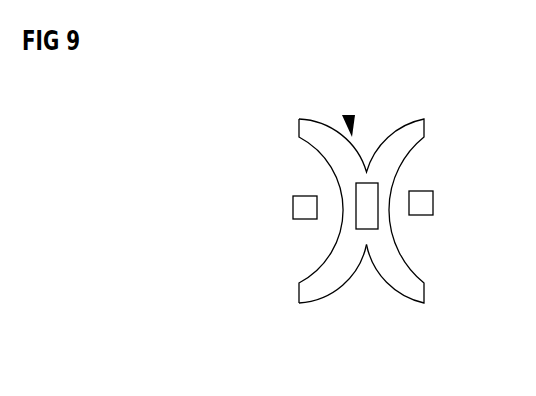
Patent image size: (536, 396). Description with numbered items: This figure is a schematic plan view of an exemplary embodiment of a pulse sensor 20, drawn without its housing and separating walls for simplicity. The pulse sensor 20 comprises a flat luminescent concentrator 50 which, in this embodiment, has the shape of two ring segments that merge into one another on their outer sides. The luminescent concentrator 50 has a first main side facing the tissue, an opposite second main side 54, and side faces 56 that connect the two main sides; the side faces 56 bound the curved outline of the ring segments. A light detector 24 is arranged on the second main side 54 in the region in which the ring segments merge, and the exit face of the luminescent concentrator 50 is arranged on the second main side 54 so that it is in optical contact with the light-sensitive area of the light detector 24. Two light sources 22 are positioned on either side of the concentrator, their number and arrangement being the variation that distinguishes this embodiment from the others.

The pulse sensor 20 is at (340, 202).
The light source 22 is at (293, 209).
The light detector 24 is at (355, 223).
The luminescent concentrator 50 is at (349, 115).
The second main side 54 is at (337, 277).
The side face 56 is at (397, 130).